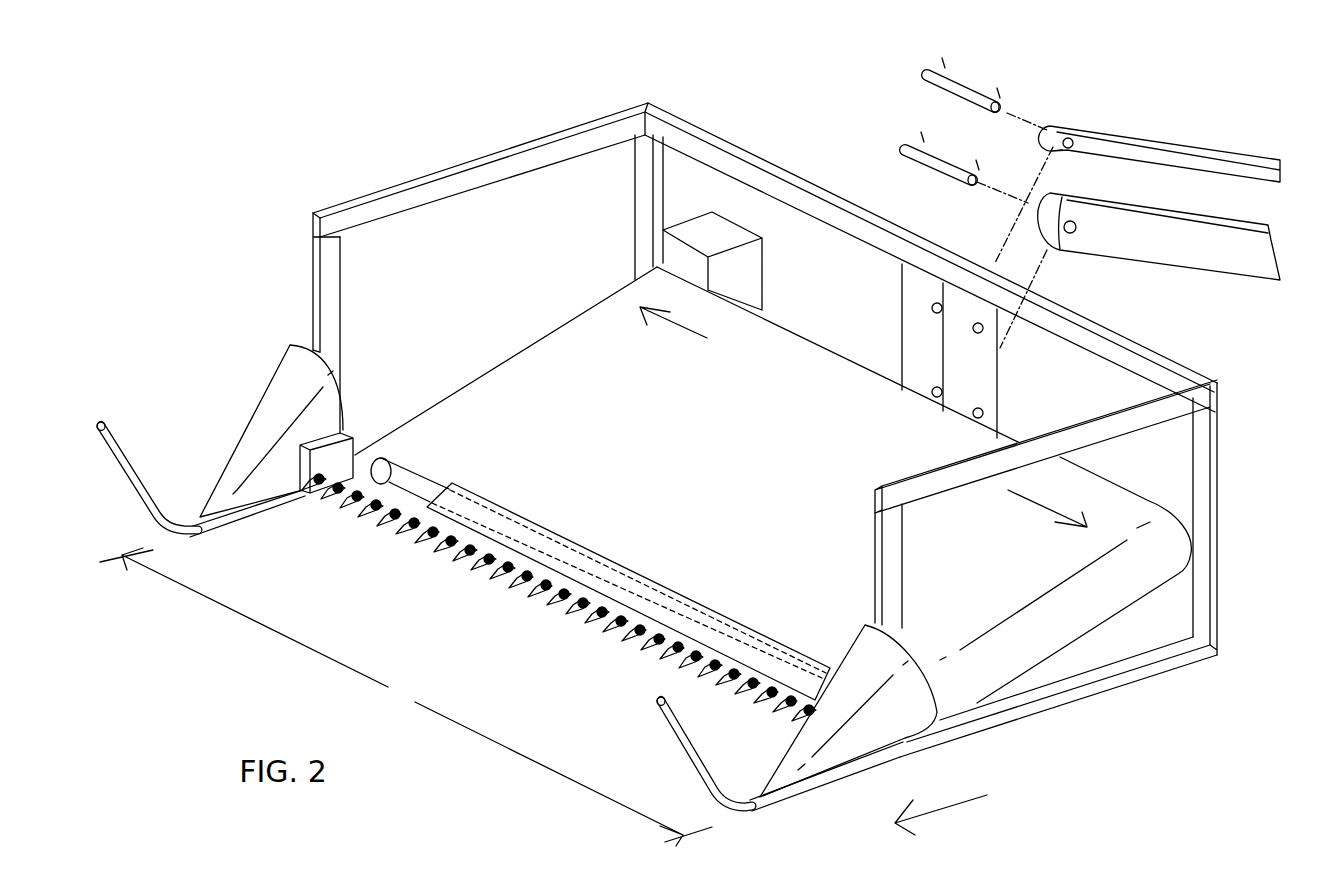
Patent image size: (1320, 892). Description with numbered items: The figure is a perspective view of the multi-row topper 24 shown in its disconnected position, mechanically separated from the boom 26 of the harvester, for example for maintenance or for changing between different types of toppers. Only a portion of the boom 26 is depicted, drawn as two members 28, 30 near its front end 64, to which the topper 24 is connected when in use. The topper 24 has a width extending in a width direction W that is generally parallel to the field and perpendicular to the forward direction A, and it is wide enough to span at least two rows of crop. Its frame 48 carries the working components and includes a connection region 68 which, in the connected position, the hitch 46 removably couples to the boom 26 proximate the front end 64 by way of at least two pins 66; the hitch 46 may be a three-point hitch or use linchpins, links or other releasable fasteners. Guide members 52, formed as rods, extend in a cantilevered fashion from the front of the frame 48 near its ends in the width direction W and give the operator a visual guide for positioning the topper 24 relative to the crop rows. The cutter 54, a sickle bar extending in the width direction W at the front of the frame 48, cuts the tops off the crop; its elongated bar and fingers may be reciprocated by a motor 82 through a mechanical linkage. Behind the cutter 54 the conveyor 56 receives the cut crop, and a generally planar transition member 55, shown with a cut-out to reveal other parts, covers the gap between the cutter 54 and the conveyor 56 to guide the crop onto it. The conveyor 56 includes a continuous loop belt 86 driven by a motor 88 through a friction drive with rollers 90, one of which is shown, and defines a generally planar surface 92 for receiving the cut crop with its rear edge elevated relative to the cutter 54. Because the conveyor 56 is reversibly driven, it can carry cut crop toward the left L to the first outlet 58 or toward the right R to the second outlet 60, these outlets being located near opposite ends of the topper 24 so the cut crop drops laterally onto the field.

The topper 24 is at (737, 92).
The boom 26 is at (1221, 120).
The support arm 28 is at (1125, 150).
The pivot bar 30 is at (1168, 240).
The hitch 46 is at (1018, 77).
The frame 48 is at (500, 150).
The guide members 52 is at (112, 437).
The cutter 54 is at (468, 568).
The transition member 55 is at (622, 590).
The conveyor 56 is at (600, 302).
The first outlet 58 is at (507, 393).
The second outlet 60 is at (1102, 687).
The front end 64 is at (1031, 229).
The pins 66 is at (907, 143).
The connection region 68 is at (975, 385).
The motor 82 is at (353, 447).
The continuous loop belt 86 is at (817, 403).
The motor 88 is at (742, 272).
The rollers 90 is at (415, 478).
The planar surface 92 is at (714, 454).
The width direction W is at (406, 697).
The left direction L is at (677, 330).
The right direction R is at (1030, 503).
The forward direction A is at (987, 795).